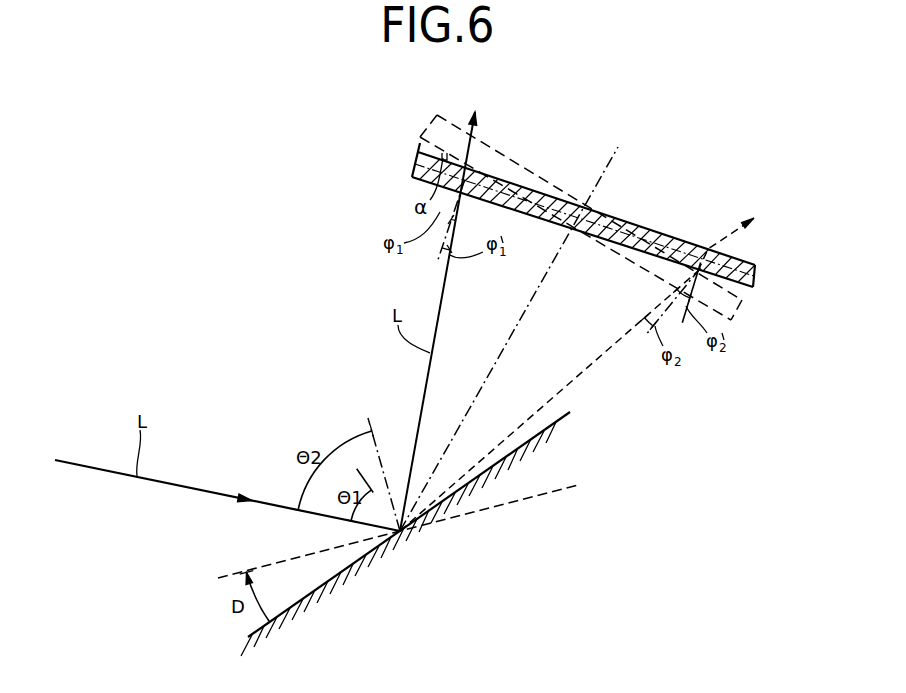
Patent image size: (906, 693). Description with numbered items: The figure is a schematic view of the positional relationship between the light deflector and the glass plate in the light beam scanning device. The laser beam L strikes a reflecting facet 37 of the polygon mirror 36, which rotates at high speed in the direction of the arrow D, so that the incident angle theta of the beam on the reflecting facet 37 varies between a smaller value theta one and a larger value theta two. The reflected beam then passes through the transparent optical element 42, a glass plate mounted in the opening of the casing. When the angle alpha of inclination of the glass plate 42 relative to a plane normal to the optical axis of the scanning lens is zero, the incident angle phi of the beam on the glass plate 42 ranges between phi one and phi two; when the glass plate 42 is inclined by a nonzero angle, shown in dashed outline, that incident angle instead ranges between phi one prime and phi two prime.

The polygon mirror 36 is at (386, 553).
The reflecting facet 37 is at (308, 594).
The transparent optical element (glass plate) 42 is at (668, 231).